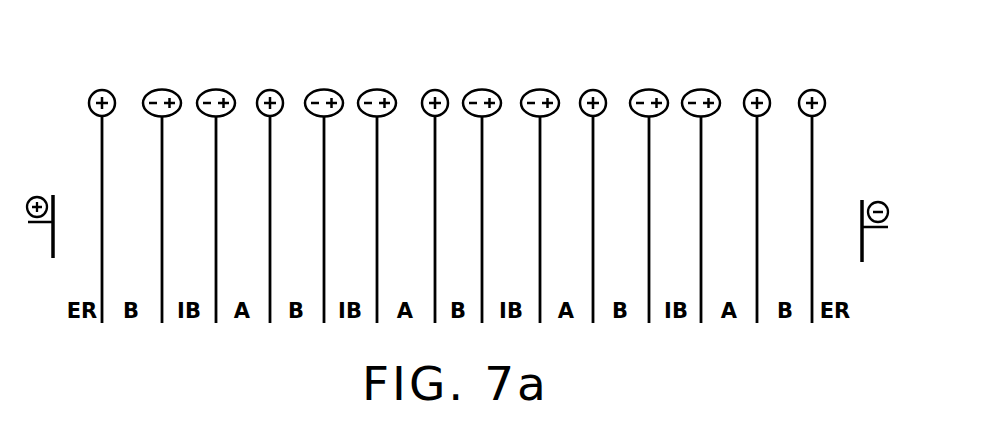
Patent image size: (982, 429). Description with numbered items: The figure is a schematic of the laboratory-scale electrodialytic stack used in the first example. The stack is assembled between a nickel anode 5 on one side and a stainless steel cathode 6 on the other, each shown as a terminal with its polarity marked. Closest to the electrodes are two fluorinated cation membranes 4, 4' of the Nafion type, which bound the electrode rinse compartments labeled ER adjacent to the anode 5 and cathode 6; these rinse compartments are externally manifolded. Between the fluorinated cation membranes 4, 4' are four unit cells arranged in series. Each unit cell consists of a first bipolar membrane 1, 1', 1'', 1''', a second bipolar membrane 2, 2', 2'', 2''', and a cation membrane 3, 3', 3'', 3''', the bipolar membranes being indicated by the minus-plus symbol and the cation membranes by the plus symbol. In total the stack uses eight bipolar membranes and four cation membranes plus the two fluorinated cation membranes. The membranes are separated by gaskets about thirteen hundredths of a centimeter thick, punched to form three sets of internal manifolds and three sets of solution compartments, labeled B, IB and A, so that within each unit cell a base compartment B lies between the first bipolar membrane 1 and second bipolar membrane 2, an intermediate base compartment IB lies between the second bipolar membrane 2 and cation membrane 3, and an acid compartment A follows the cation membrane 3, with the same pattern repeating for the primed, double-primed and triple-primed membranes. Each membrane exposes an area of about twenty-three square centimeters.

The fluorinated cation membrane 4 is at (88, 187).
The bipolar membrane 1 is at (154, 187).
The bipolar membrane 2 is at (209, 187).
The cation membrane 3 is at (260, 187).
The bipolar membrane 1' is at (315, 187).
The bipolar membrane 2' is at (368, 187).
The cation membrane 3' is at (427, 187).
The bipolar membrane 1'' is at (476, 187).
The bipolar membrane 2'' is at (529, 187).
The cation membrane 3'' is at (582, 187).
The bipolar membrane 1''' is at (640, 187).
The bipolar membrane 2''' is at (690, 187).
The cation membrane 3''' is at (746, 187).
The fluorinated cation membrane 4' is at (809, 187).
The nickel anode 5 is at (53, 240).
The stainless steel cathode 6 is at (862, 240).